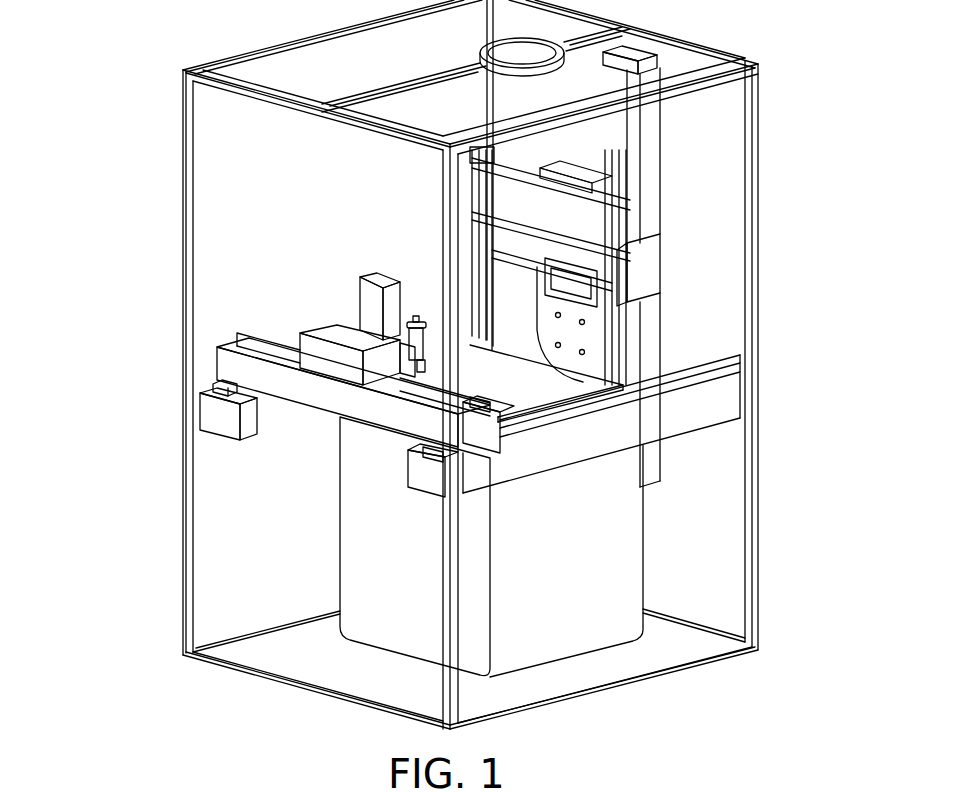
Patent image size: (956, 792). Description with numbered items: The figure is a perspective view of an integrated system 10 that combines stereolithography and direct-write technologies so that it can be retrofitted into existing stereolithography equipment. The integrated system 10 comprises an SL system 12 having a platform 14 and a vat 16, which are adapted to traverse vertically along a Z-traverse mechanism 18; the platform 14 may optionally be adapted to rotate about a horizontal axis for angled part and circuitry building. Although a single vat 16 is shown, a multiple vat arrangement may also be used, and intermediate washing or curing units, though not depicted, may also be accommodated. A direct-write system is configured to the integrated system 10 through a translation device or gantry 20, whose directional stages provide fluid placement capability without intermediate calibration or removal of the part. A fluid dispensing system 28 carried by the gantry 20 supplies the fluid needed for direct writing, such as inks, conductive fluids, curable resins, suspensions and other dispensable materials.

The integrated system 10 is at (122, 151).
The SL system 12 is at (766, 107).
The platform 14 is at (587, 384).
The vat 16 is at (628, 553).
The Z-traverse mechanism 18 is at (656, 268).
The gantry 20 is at (205, 364).
The fluid dispensing system 28 is at (413, 303).